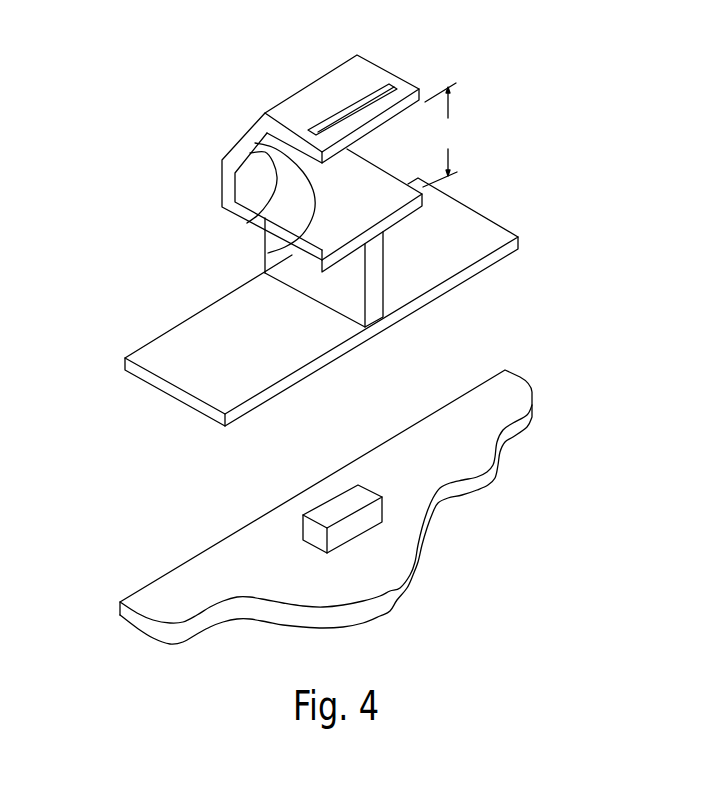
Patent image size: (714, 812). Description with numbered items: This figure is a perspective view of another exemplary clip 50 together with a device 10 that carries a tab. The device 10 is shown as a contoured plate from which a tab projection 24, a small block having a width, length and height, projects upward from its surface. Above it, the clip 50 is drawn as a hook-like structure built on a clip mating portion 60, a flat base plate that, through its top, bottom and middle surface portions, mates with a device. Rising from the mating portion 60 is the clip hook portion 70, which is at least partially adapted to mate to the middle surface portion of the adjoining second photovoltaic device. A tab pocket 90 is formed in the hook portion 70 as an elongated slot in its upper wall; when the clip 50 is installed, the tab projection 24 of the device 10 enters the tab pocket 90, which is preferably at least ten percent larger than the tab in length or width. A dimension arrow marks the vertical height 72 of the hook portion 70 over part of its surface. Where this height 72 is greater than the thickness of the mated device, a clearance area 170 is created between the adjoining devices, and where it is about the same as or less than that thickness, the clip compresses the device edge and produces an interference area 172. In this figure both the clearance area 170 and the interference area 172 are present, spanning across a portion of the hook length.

The device 10 is at (468, 461).
The tab projection 24 is at (335, 510).
The clip 50 is at (305, 79).
The clip mating portion 60 is at (264, 272).
The clip hook portion 70 is at (246, 143).
The vertical height 72 is at (443, 135).
The tab pocket 90 is at (375, 90).
The clearance area 170 is at (262, 250).
The interference area 172 is at (247, 224).